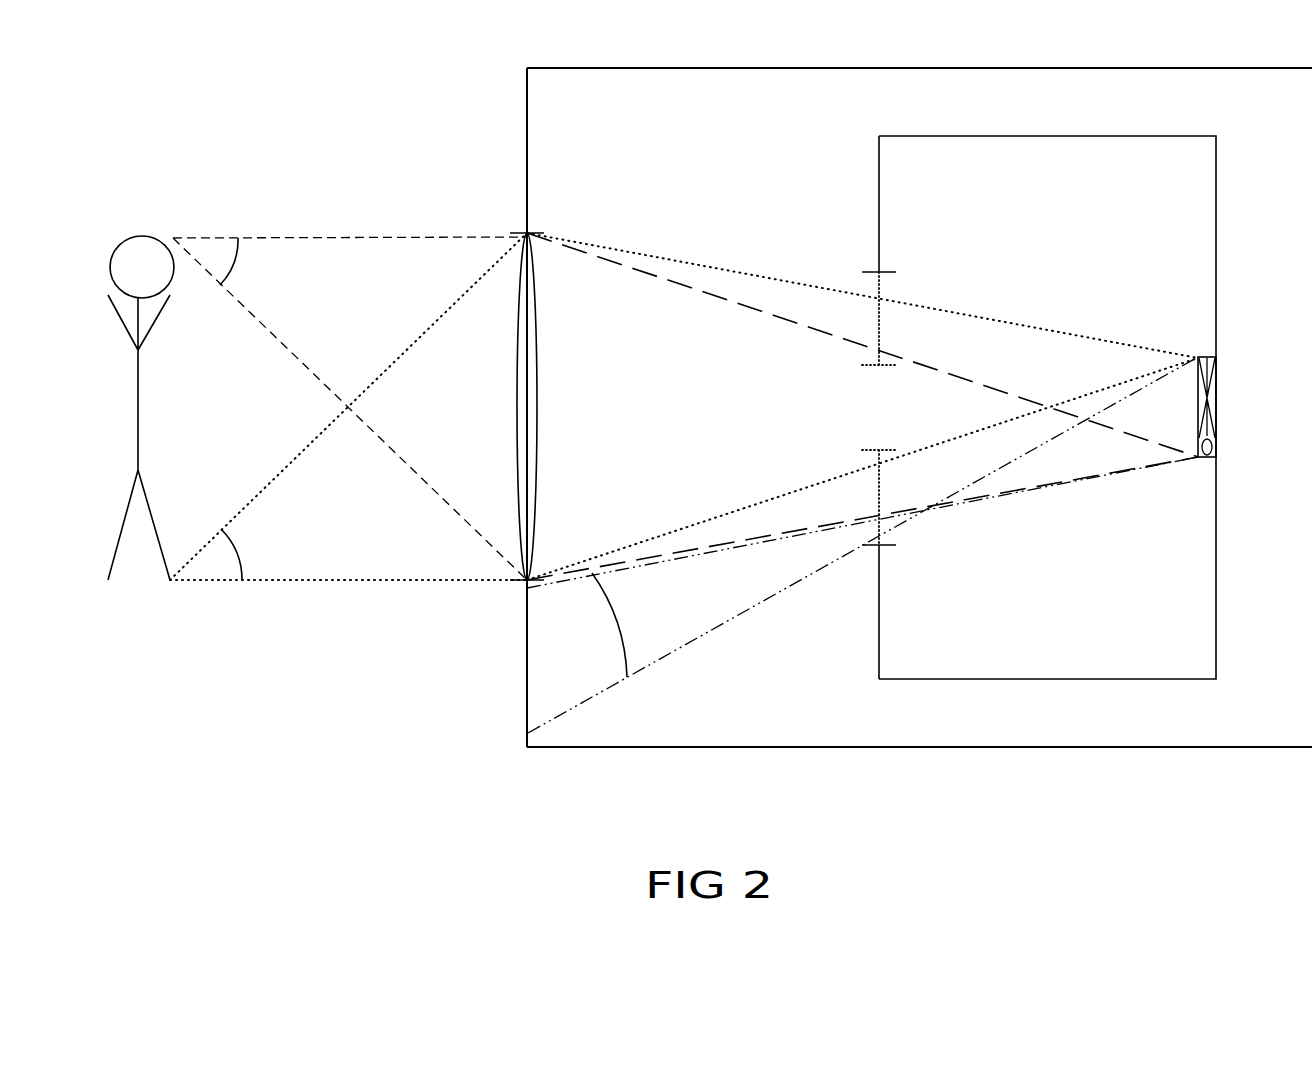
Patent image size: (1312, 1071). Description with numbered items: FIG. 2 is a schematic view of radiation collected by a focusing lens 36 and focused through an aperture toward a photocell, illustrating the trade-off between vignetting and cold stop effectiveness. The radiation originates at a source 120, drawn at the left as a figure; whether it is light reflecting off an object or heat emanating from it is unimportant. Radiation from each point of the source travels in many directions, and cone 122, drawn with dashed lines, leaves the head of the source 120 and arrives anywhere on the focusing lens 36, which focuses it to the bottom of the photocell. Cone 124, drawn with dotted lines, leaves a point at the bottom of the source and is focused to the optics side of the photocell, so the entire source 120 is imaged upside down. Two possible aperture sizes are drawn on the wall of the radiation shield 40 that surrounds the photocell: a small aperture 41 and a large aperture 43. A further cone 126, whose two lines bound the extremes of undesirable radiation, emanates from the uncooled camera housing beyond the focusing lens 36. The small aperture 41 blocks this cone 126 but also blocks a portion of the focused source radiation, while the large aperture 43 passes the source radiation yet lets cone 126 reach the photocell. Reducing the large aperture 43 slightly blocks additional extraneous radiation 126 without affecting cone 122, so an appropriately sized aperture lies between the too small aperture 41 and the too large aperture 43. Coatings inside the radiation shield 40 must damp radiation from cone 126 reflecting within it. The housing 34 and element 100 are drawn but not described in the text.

The camera housing 34 is at (777, 70).
The focusing lens 36 is at (523, 583).
The radiation shield 40 is at (903, 134).
The small aperture 41 is at (866, 449).
The large aperture 43 is at (896, 545).
The image sensor 100 is at (1212, 410).
The source 120 is at (163, 281).
The radiation cone 122 is at (248, 264).
The radiation cone 124 is at (243, 565).
The radiation cone 126 is at (631, 626).